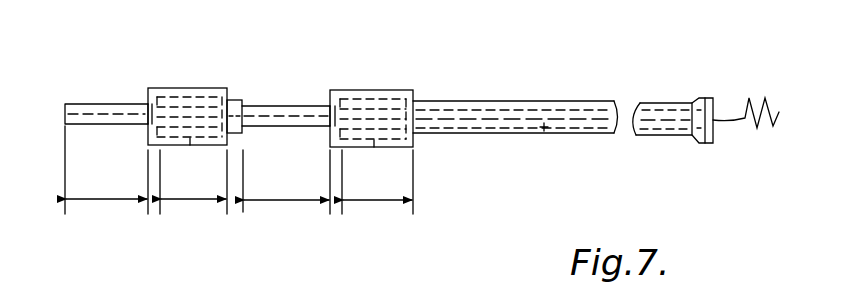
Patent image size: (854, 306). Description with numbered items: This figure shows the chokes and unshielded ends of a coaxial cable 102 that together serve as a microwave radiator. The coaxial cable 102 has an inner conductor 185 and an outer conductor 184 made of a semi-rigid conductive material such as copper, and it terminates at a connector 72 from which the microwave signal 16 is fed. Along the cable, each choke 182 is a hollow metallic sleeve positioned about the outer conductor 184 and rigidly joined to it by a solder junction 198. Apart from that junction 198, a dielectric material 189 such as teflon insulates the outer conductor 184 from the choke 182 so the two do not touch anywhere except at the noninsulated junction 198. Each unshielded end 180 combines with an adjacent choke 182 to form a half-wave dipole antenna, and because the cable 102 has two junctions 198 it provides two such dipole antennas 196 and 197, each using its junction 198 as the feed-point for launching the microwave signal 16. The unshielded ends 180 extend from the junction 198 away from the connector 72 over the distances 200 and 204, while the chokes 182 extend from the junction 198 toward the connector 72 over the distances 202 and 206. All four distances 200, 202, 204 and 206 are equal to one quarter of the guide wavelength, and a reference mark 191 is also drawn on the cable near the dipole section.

The microwave signal 16 is at (766, 100).
The connector 72 is at (707, 98).
The coaxial cable 102 is at (658, 103).
The unshielded end 180 is at (95, 103).
The choke 182 is at (196, 88).
The outer conductor 184 is at (242, 100).
The inner conductor 185 is at (504, 118).
The dielectric material 189 is at (193, 145).
The tap point 191 is at (544, 130).
The half-wave dipole antenna 196 is at (170, 72).
The half-wave dipole antenna 197 is at (333, 72).
The solder junction 198 is at (148, 134).
The distance 200 is at (113, 201).
The distance 202 is at (220, 229).
The distance 204 is at (291, 201).
The distance 206 is at (411, 231).